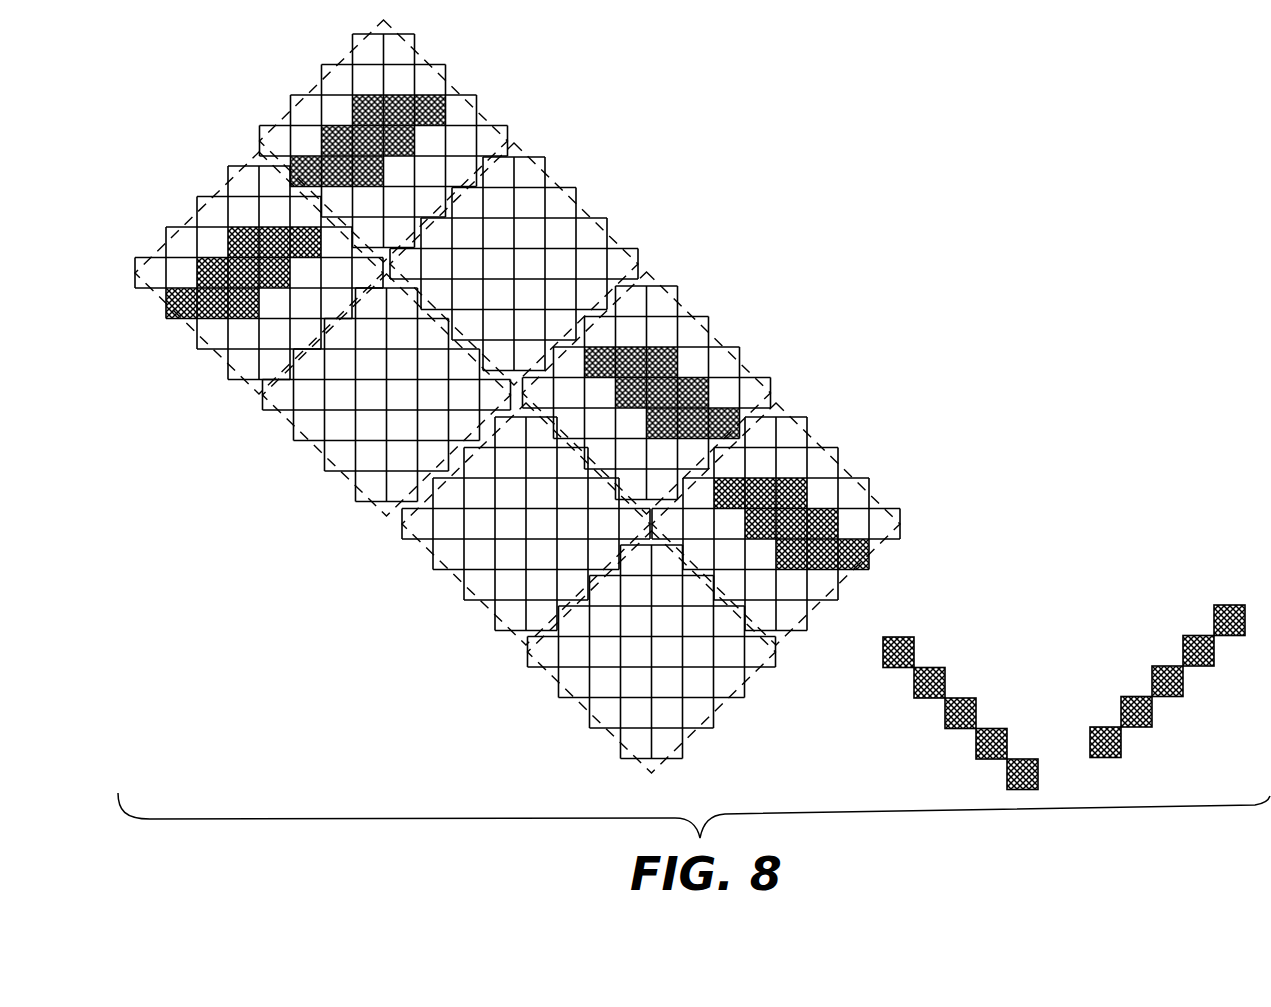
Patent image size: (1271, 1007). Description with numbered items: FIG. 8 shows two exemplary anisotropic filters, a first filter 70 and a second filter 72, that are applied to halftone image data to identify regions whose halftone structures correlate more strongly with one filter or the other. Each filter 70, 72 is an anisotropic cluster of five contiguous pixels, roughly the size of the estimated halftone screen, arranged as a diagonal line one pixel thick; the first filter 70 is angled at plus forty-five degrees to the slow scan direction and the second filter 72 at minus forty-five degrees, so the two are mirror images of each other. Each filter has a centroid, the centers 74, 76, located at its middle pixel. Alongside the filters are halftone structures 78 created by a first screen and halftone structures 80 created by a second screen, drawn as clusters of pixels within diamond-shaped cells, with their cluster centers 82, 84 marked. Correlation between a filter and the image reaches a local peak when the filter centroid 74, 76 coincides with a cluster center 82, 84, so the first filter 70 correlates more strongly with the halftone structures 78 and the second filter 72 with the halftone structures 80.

The first filter 70 is at (1164, 681).
The second filter 72 is at (949, 713).
The center of first filter 74 is at (962, 697).
The center of second filter 76 is at (1180, 678).
The halftone structures created by first screen 78 is at (259, 273).
The halftone structures created by second screen 80 is at (776, 524).
The center of halftone cluster 82 is at (240, 290).
The center of halftone cluster 84 is at (787, 517).